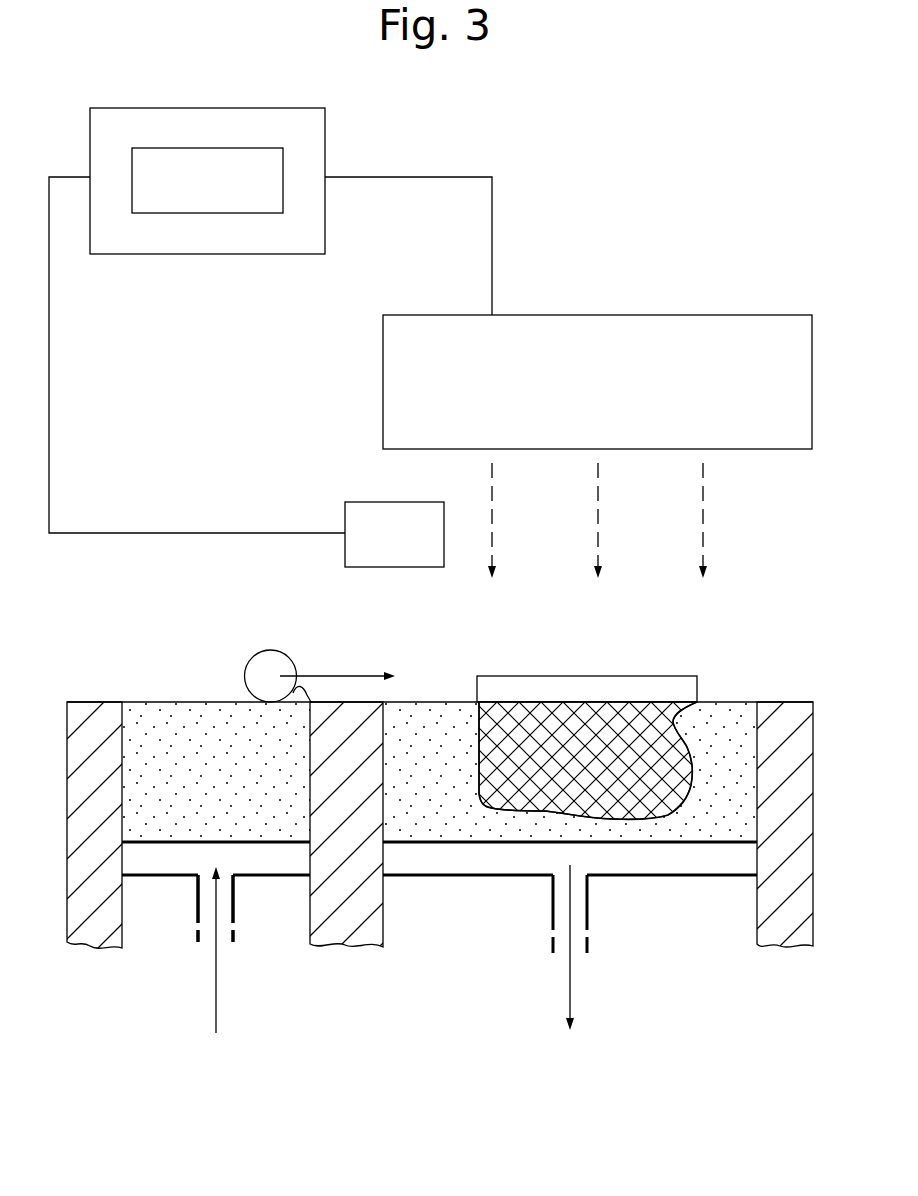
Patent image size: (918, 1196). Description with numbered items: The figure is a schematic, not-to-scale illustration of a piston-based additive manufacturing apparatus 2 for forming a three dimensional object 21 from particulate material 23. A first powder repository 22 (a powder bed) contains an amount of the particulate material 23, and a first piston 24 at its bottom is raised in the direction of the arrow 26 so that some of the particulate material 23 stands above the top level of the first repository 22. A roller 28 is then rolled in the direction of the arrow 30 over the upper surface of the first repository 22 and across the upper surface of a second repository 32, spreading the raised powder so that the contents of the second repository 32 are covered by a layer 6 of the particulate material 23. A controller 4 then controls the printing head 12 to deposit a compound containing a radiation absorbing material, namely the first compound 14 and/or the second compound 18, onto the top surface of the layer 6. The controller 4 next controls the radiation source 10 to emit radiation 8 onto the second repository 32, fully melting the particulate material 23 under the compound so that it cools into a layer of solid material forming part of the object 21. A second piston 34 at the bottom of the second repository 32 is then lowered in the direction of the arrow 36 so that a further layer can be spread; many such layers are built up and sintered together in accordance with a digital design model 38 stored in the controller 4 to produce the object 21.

The apparatus 2 is at (603, 152).
The controller 4 is at (129, 108).
The digital design model 38 is at (191, 193).
The radiation source 10 is at (689, 315).
The printing head 12 is at (363, 502).
The radiation 8 is at (494, 493).
The layer 6 is at (413, 700).
The first compound 14 is at (568, 721).
The second compound 18 is at (568, 721).
The three dimensional object 21 is at (478, 742).
The first powder repository 22 is at (122, 714).
The particulate material 23 is at (174, 720).
The first piston 24 is at (160, 878).
The direction of first piston movement 26 is at (216, 1005).
The roller 28 is at (268, 651).
The direction of roller movement 30 is at (345, 672).
The second repository 32 is at (758, 712).
The second piston 34 is at (681, 878).
The direction of second piston movement 36 is at (571, 992).